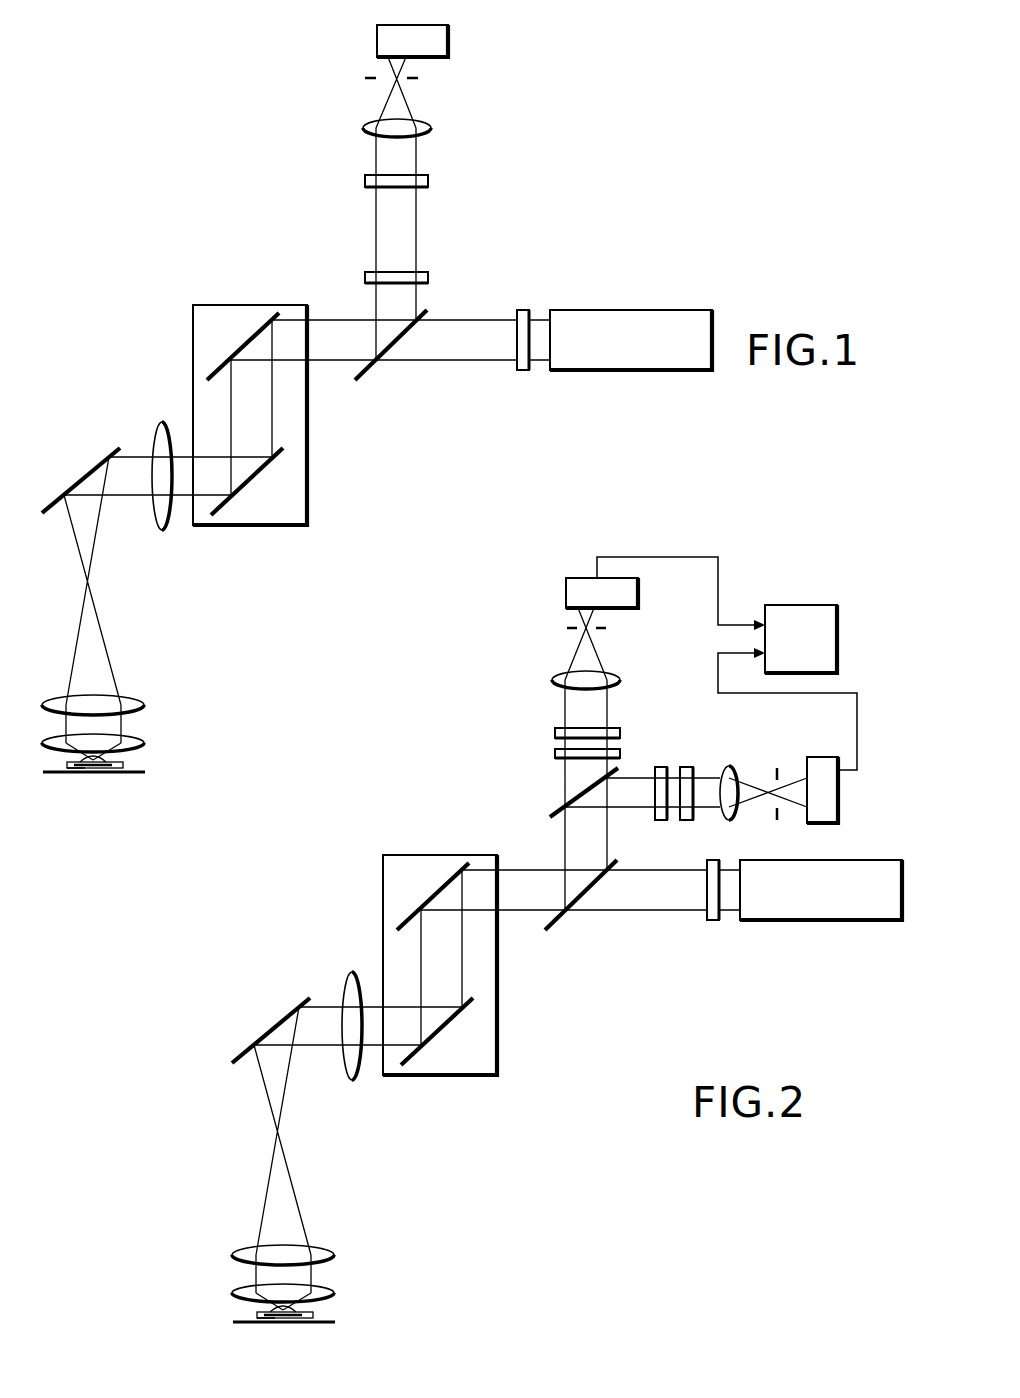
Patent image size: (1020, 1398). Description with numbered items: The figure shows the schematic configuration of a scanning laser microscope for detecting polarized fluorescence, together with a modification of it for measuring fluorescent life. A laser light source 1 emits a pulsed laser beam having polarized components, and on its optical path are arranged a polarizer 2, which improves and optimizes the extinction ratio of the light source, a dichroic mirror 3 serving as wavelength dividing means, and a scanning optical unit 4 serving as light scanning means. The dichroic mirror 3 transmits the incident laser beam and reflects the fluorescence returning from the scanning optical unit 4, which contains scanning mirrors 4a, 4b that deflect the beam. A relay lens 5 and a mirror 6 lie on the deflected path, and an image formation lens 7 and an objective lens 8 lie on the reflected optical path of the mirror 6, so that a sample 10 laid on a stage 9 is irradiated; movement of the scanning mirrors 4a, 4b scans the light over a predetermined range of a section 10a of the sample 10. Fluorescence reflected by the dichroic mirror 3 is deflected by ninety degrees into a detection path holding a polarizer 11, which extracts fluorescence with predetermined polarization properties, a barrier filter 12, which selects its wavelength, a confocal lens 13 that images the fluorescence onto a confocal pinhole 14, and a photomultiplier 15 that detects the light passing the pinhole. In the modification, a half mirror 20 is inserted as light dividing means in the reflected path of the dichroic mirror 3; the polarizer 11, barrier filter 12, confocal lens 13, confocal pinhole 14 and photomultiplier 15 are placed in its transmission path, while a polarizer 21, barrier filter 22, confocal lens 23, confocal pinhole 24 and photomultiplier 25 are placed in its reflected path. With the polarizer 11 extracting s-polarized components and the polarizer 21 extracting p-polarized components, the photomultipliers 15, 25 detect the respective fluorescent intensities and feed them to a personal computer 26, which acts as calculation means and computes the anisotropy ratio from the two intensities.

In FIG. 1, the laser light source 1 is at (634, 310).
In FIG. 2, the laser light source 1 is at (821, 911).
In FIG. 1, the polarizer 2 is at (523, 310).
In FIG. 2, the polarizer 2 is at (714, 911).
In FIG. 1, the dichroic mirror 3 is at (362, 378).
In FIG. 2, the dichroic mirror 3 is at (581, 914).
In FIG. 1, the scanning optical unit 4 is at (307, 490).
In FIG. 2, the scanning optical unit 4 is at (460, 965).
In FIG. 1, the scanning mirror 4a is at (246, 336).
In FIG. 2, the scanning mirror 4a is at (433, 873).
In FIG. 1, the scanning mirror 4b is at (256, 468).
In FIG. 2, the scanning mirror 4b is at (437, 1052).
In FIG. 1, the relay lens 5 is at (162, 530).
In FIG. 2, the relay lens 5 is at (352, 1055).
In FIG. 1, the mirror 6 is at (92, 462).
In FIG. 2, the mirror 6 is at (271, 1019).
In FIG. 1, the image formation lens 7 is at (144, 705).
In FIG. 2, the image formation lens 7 is at (304, 1252).
In FIG. 1, the objective lens 8 is at (144, 743).
In FIG. 2, the objective lens 8 is at (304, 1292).
In FIG. 1, the stage 9 is at (135, 773).
In FIG. 2, the stage 9 is at (284, 1346).
In FIG. 1, the sample 10 is at (110, 760).
In FIG. 2, the sample 10 is at (322, 1318).
In FIG. 1, the section 10a is at (80, 773).
In FIG. 2, the section 10a is at (267, 1342).
In FIG. 1, the polarizer 11 is at (428, 277).
In FIG. 2, the polarizer 11 is at (555, 755).
In FIG. 1, the barrier filter 12 is at (428, 181).
In FIG. 2, the barrier filter 12 is at (555, 733).
In FIG. 1, the confocal lens 13 is at (431, 128).
In FIG. 2, the confocal lens 13 is at (552, 680).
In FIG. 1, the confocal pinhole 14 is at (418, 82).
In FIG. 2, the confocal pinhole 14 is at (568, 630).
In FIG. 1, the photomultiplier 15 is at (448, 38).
In FIG. 2, the photomultiplier 15 is at (566, 592).
In FIG. 2, the half mirror 20 is at (560, 808).
In FIG. 2, the polarizer 21 is at (661, 767).
In FIG. 2, the barrier filter 22 is at (690, 767).
In FIG. 2, the confocal lens 23 is at (731, 768).
In FIG. 2, the confocal pinhole 24 is at (780, 775).
In FIG. 2, the photomultiplier 25 is at (838, 785).
In FIG. 2, the personal computer 26 is at (837, 638).